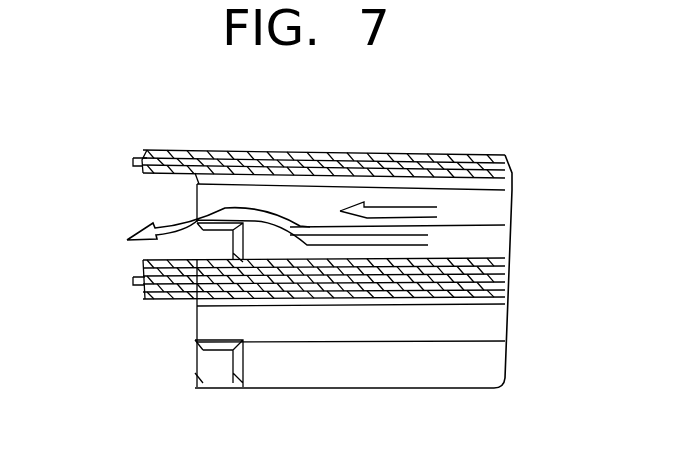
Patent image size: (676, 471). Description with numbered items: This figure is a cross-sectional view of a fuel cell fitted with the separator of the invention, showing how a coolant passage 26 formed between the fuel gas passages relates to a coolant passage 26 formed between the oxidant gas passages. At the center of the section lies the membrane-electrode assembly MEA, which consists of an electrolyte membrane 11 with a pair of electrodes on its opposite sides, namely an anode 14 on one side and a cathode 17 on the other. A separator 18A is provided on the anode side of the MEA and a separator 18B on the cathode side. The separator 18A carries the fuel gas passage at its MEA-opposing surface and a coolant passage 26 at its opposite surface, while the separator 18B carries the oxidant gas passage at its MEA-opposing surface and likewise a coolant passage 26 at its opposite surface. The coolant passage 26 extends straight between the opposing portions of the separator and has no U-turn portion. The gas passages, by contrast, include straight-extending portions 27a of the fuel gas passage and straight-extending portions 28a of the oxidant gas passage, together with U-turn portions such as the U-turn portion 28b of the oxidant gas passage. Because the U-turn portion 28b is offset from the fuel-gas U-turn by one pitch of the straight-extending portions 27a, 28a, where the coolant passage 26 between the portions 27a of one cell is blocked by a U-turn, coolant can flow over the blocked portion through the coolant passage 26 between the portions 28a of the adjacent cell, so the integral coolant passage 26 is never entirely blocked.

The electrolyte membrane 11 is at (133, 282).
The anode 14 is at (505, 322).
The cathode 17 is at (497, 257).
The separator 18A is at (512, 202).
The separator 18B is at (503, 245).
The coolant passage 26 is at (291, 250).
The straight-extending portions of the fuel gas passage 27a is at (447, 205).
The straight-extending portions of the oxidant gas passage 28a is at (470, 240).
The U-turn portion of the oxidant gas passage 28b is at (222, 253).
The membrane-electrode assembly MEA is at (507, 268).